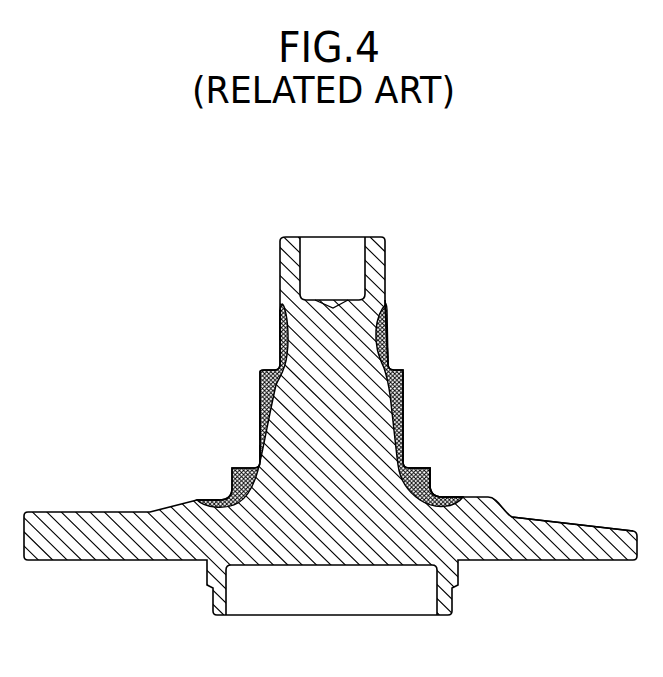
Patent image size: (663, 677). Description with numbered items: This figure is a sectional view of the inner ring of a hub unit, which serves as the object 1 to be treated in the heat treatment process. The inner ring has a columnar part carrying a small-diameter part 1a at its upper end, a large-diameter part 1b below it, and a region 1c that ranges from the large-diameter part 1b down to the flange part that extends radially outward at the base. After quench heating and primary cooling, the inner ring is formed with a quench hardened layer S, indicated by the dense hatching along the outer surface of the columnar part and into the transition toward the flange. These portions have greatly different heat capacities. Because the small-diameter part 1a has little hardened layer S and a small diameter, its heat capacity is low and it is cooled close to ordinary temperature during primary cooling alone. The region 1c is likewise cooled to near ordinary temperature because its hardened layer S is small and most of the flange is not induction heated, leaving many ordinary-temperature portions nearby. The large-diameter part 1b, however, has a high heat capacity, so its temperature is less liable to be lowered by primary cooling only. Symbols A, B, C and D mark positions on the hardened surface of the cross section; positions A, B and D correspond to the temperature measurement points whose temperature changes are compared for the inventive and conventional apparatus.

The object to be treated 1 is at (331, 402).
The small-diameter part 1a is at (387, 298).
The large-diameter part 1b is at (403, 372).
The region ranging from the large-diameter part to the flange part 1c is at (412, 450).
The quench hardened layer S is at (260, 387).
The temperature measurement position A is at (280, 329).
The temperature measurement position B is at (260, 419).
The hardened layer boundary point C is at (258, 461).
The temperature measurement position D is at (204, 496).